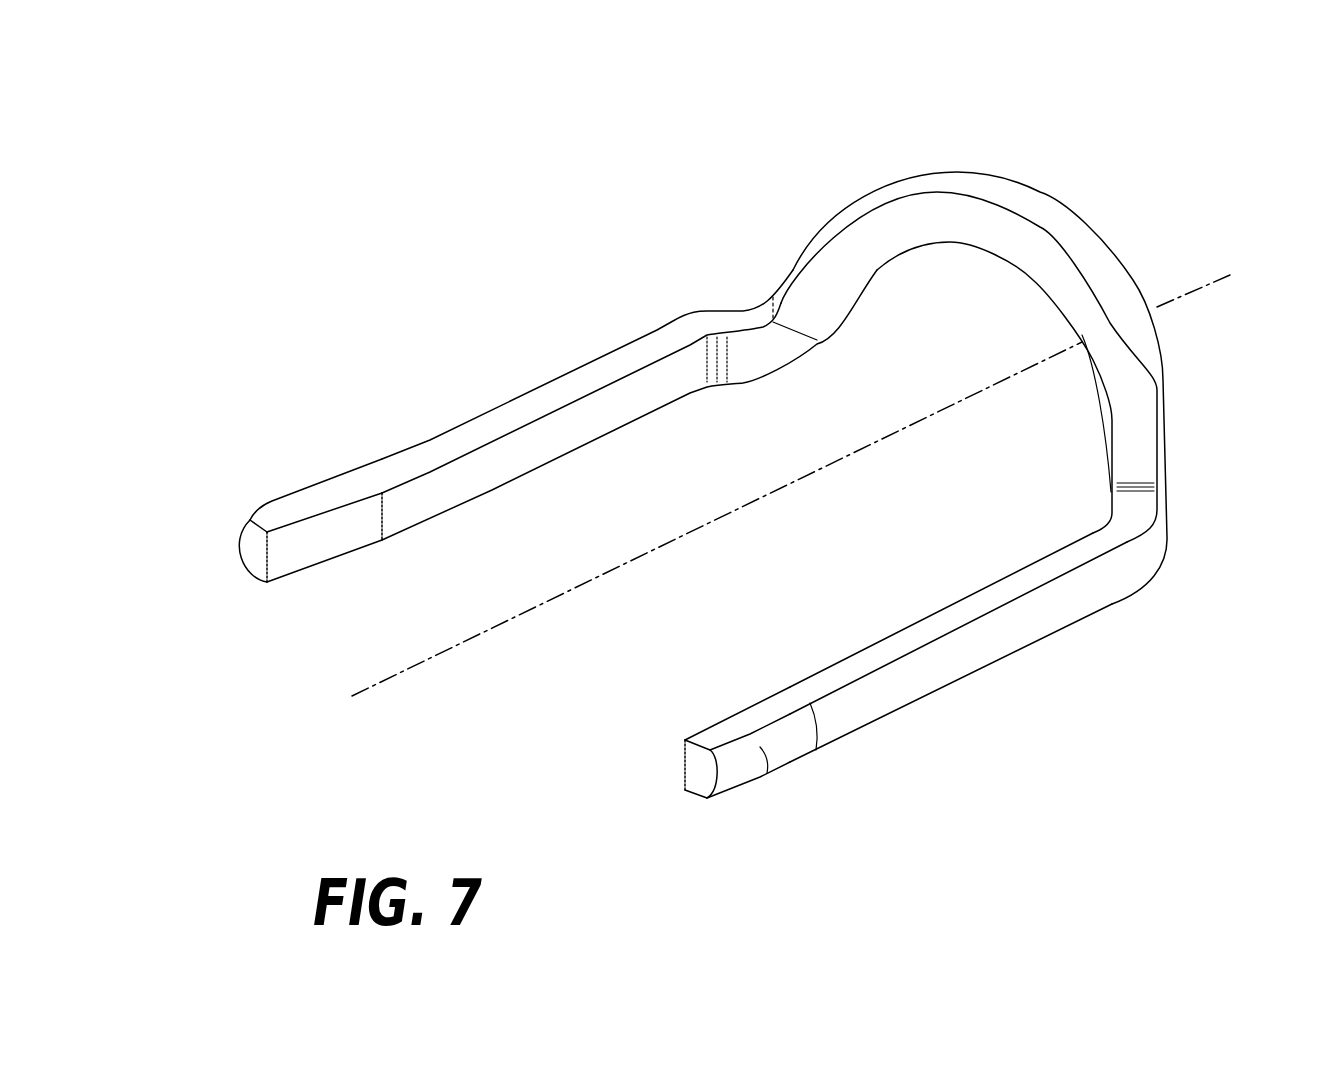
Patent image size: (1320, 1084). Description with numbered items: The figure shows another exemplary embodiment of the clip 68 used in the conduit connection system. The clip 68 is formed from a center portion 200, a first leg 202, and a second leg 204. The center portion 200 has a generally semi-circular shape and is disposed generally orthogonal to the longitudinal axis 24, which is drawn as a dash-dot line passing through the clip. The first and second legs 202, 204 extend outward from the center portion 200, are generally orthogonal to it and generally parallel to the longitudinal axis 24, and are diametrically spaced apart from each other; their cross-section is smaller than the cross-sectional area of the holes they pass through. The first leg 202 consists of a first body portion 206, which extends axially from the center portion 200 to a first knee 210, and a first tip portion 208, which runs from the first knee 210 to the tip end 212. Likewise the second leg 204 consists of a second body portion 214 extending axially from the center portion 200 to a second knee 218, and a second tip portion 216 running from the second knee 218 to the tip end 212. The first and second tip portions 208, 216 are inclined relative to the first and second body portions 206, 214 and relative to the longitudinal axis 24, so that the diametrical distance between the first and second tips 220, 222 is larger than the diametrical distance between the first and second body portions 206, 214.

The longitudinal axis 24 is at (1203, 282).
The clip 68 is at (1074, 143).
The center portion 200 is at (1082, 232).
The first leg 202 is at (1203, 655).
The second leg 204 is at (670, 275).
The first body portion 206 is at (1083, 498).
The first tip portion 208 is at (773, 662).
The first knee 210 is at (814, 760).
The tip end 212 is at (223, 576).
The second body portion 214 is at (718, 407).
The second tip portion 216 is at (379, 575).
The second knee 218 is at (385, 556).
The first tip 220 is at (697, 768).
The second tip 222 is at (247, 551).